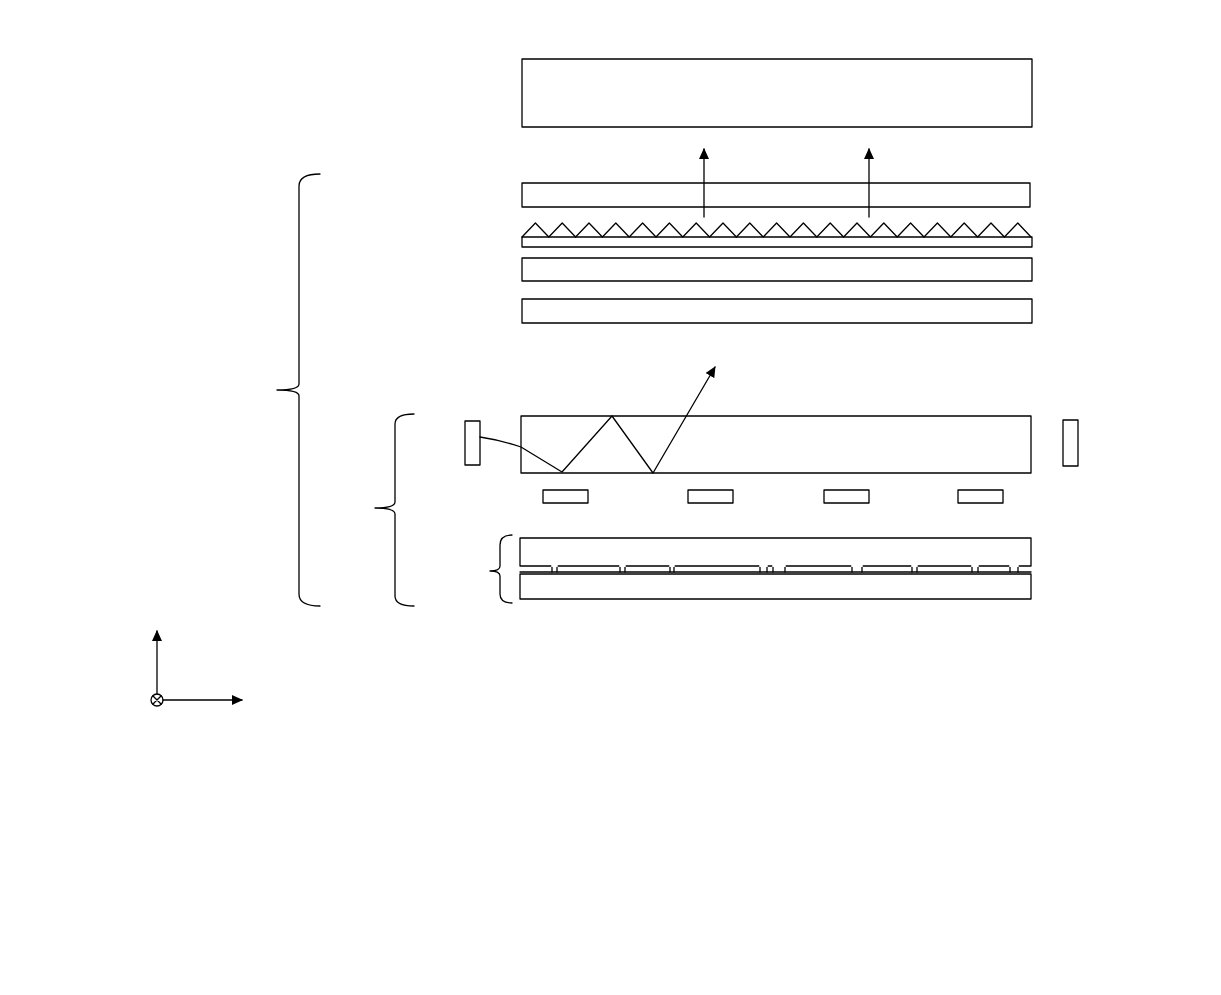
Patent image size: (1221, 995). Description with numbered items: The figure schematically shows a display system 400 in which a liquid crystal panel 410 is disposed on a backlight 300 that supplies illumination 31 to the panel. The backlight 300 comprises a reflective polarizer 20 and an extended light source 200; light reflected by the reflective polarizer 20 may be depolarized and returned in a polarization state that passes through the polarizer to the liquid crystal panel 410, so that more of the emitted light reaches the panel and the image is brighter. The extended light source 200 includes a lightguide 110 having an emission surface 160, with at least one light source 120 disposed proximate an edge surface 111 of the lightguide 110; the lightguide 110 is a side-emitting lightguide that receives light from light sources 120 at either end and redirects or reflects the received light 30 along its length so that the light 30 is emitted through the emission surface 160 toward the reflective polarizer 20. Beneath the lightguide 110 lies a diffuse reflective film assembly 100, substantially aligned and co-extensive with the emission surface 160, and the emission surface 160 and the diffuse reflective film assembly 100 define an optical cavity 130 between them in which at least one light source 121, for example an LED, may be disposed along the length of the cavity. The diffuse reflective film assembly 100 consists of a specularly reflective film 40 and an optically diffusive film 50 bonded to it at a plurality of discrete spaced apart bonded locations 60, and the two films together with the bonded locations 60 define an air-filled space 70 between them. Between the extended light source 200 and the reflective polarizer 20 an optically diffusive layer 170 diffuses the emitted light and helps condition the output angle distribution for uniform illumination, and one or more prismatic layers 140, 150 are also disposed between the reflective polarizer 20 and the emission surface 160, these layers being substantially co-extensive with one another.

The display system 400 is at (272, 72).
The liquid crystal panel 410 is at (1018, 90).
The illumination 31 is at (869, 163).
The reflective polarizer 20 is at (520, 197).
The prismatic layer 150 is at (1024, 243).
The prismatic layer 140 is at (1020, 269).
The optically diffusive layer 170 is at (1020, 313).
The backlight 300 is at (716, 426).
The light source 120 is at (464, 435).
The lightguide 110 is at (540, 427).
The light 30 is at (704, 381).
The emission surface 160 is at (1003, 413).
The edge surface 111 is at (1032, 428).
The extended light source 200 is at (766, 508).
The light source 121 is at (545, 496).
The diffuse reflective film assembly 100 is at (775, 602).
The optically diffusive film 50 is at (1015, 551).
The specularly reflective film 40 is at (1022, 587).
The bonded location 60 is at (672, 572).
The optical cavity 130 is at (771, 526).
The air-filled space 70 is at (947, 572).